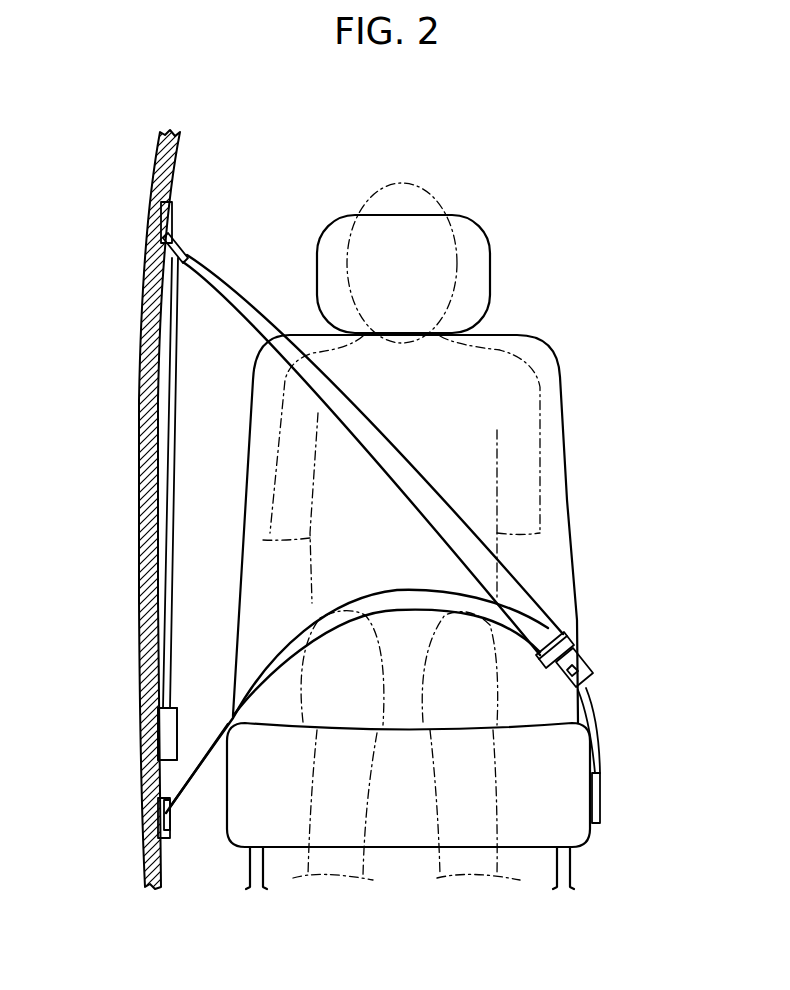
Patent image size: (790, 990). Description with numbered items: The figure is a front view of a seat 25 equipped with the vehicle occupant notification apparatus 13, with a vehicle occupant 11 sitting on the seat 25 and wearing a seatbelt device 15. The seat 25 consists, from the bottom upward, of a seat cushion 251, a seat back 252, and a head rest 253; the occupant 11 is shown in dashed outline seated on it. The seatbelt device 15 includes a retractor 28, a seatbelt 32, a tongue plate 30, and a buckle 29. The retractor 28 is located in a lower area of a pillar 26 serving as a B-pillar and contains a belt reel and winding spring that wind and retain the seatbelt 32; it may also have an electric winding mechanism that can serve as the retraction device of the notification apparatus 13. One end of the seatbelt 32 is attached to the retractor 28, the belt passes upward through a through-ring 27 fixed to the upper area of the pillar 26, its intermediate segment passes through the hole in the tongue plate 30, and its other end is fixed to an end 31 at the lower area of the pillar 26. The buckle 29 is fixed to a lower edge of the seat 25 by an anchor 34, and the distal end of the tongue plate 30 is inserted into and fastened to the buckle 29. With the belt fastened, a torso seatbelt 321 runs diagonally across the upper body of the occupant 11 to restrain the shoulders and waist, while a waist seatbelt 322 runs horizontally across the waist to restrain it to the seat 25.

The vehicle occupant 11 is at (523, 368).
The vehicle occupant notification apparatus 13 is at (167, 734).
The seatbelt device 15 is at (601, 607).
The seat 25 is at (457, 552).
The pillar 26 is at (147, 236).
The through-ring 27 is at (176, 240).
The retractor 28 is at (157, 762).
The buckle 29 is at (590, 668).
The tongue plate 30 is at (577, 637).
The end 31 is at (163, 838).
The seatbelt 32 is at (233, 281).
The anchor 34 is at (601, 787).
The seat cushion 251 is at (593, 836).
The seat back 252 is at (563, 462).
The head rest 253 is at (491, 275).
The torso seatbelt 321 is at (268, 318).
The waist seatbelt 322 is at (367, 592).